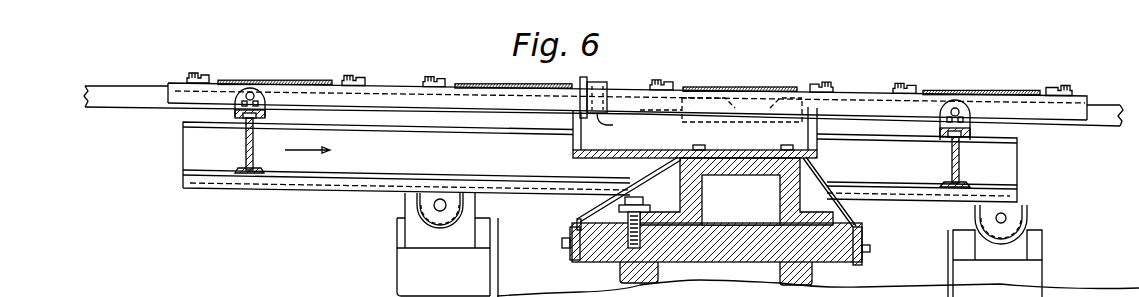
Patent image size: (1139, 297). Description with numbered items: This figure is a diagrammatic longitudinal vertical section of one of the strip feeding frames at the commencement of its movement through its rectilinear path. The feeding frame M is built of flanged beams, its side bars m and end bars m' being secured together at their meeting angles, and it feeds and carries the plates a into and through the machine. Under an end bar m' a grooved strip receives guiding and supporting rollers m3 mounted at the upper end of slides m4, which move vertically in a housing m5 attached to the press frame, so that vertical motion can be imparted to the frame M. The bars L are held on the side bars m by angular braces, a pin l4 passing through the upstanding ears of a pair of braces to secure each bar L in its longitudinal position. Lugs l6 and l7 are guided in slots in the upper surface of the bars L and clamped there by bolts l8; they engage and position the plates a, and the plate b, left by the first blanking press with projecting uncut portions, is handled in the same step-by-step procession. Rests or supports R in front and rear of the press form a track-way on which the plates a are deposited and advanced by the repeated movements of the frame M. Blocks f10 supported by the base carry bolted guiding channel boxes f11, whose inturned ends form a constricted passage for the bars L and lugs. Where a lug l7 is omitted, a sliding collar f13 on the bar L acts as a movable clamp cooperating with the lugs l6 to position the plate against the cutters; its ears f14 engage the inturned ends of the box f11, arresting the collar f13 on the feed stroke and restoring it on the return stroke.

The bar L is at (168, 83).
The rest or support R is at (135, 102).
The plate a is at (294, 80).
The plate b is at (970, 93).
The pin l4 is at (251, 95).
The lug l6 is at (205, 72).
The lug l7 is at (353, 74).
The bolt l8 is at (381, 77).
The block f10 is at (695, 198).
The guiding channel box f11 is at (572, 152).
The collar f13 is at (600, 83).
The ear f14 is at (618, 123).
The feeding frame M is at (183, 143).
The side bar m is at (599, 152).
The end bar m' is at (371, 157).
The guiding and supporting roller m3 is at (1012, 213).
The slide m4 is at (1037, 221).
The housing m5 is at (1033, 283).